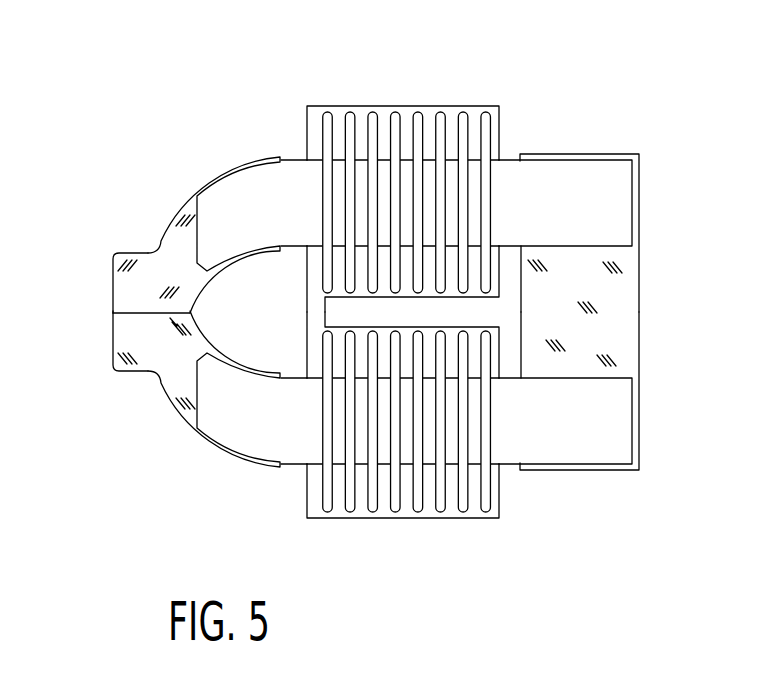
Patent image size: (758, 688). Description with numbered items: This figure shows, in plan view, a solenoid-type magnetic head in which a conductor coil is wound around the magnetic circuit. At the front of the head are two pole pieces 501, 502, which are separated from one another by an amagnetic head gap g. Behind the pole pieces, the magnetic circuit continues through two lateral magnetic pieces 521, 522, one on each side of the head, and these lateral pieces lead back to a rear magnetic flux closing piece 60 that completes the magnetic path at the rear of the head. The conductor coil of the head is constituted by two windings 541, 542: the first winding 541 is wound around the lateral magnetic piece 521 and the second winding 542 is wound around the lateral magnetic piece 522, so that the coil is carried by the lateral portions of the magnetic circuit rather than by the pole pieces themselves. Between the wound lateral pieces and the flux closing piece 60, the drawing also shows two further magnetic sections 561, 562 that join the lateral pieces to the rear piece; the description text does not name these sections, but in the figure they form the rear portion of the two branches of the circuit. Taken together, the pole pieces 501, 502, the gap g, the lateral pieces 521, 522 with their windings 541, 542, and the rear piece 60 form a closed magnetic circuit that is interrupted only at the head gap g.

The pole piece 501 is at (108, 338).
The pole piece 502 is at (120, 288).
The amagnetic head gap g is at (115, 313).
The lateral magnetic piece 521 is at (225, 438).
The lateral magnetic piece 522 is at (228, 182).
The winding 541 is at (397, 507).
The winding 542 is at (374, 118).
The first output waveguide arm 561 is at (573, 455).
The second output waveguide arm 562 is at (547, 165).
The rear magnetic flux closing piece 60 is at (632, 305).